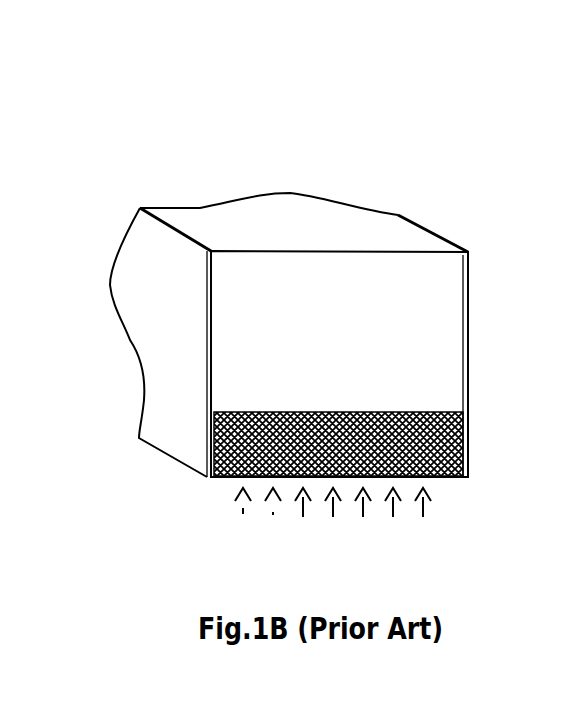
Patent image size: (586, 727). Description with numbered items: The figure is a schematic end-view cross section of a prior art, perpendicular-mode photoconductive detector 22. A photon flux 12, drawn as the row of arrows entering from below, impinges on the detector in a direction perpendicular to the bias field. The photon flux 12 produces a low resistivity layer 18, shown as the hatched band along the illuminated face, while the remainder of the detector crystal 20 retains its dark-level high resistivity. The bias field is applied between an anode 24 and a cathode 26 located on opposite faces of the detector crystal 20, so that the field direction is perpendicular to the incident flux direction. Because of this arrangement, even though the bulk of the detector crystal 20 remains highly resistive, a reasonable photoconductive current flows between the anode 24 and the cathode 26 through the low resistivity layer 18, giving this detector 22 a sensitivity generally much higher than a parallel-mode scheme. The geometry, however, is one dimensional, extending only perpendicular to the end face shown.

The photon flux 12 is at (333, 527).
The low resistivity layer 18 is at (213, 437).
The detector crystal 20 is at (247, 310).
The photoconductive detector 22 is at (279, 188).
The anode 24 is at (437, 232).
The cathode 26 is at (180, 355).